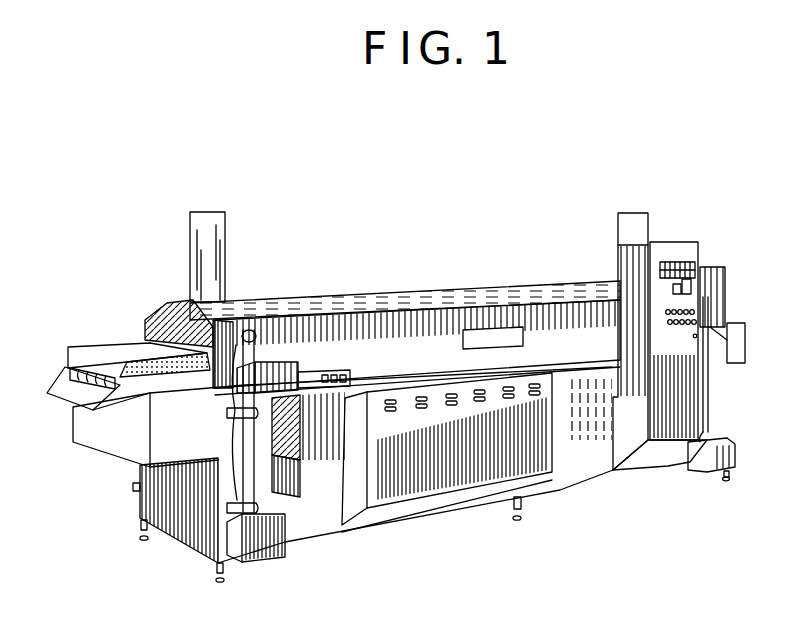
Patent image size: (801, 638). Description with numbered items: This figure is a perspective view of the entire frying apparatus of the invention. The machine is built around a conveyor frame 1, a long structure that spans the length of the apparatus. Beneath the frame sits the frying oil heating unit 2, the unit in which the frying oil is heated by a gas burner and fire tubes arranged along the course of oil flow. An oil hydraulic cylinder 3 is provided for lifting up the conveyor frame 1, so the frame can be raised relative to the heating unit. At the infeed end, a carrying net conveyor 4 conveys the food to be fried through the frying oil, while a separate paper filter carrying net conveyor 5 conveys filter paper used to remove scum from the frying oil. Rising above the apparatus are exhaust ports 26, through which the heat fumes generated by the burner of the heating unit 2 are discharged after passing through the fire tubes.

The conveyor frame 1 is at (367, 343).
The frying oil heating unit 2 is at (468, 473).
The oil hydraulic cylinder 3 is at (258, 478).
The carrying net conveyor 4 is at (65, 367).
The paper filter carrying net conveyor 5 is at (327, 377).
The exhaust port 26 is at (208, 220).